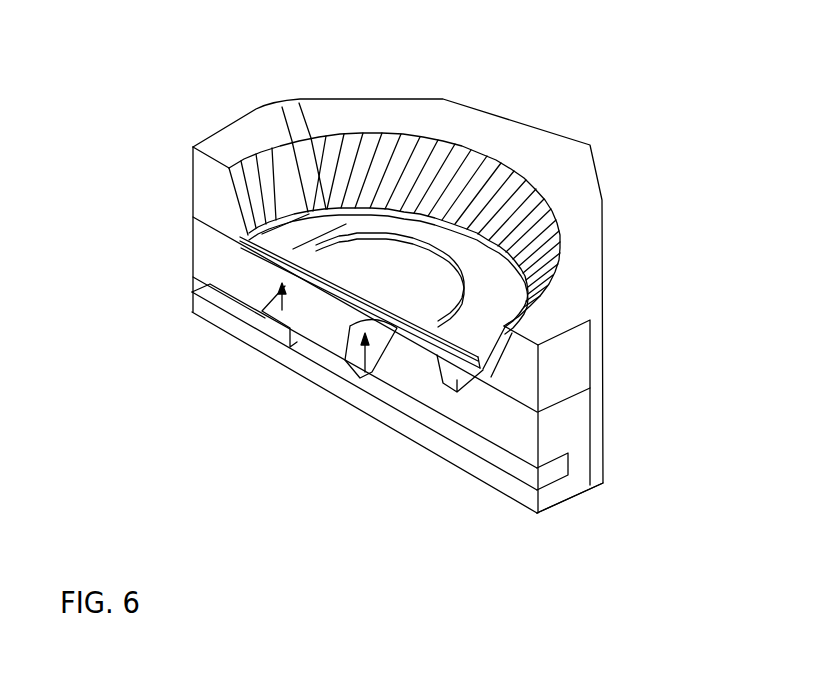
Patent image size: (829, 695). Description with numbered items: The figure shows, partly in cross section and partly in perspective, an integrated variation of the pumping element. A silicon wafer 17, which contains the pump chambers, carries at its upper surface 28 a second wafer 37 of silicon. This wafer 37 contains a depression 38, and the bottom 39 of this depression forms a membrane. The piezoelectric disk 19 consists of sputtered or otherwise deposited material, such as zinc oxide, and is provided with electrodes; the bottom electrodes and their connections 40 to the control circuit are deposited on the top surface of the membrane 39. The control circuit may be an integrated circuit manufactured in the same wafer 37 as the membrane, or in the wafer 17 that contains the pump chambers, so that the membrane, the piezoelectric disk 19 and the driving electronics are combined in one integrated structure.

The silicon wafer 17 is at (213, 264).
The piezoelectric disk 19 is at (322, 279).
The upper surface 28 is at (510, 391).
The wafer of silicon 37 is at (213, 193).
The depression 38 is at (498, 196).
The bottom of the depression (membrane) 39 is at (518, 292).
The connections 40 is at (283, 114).